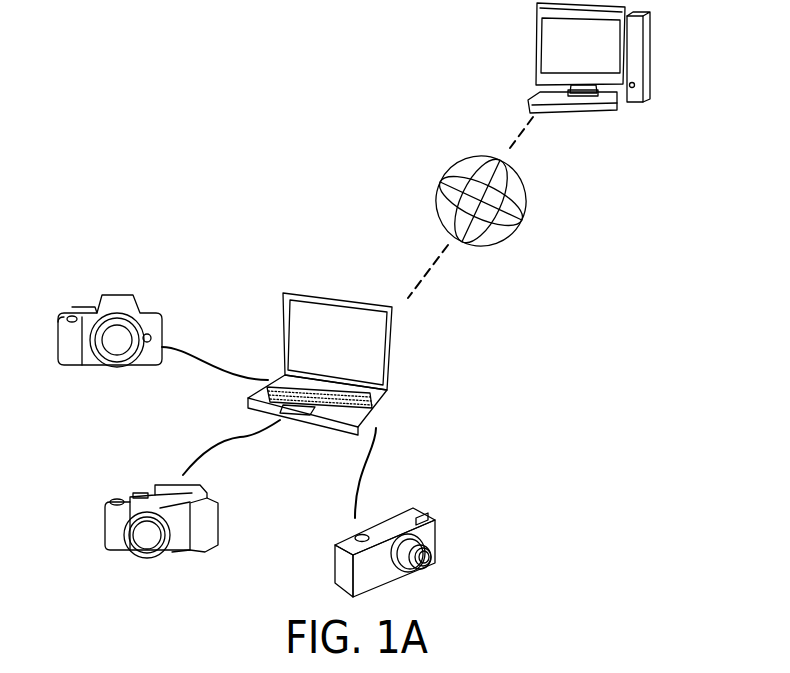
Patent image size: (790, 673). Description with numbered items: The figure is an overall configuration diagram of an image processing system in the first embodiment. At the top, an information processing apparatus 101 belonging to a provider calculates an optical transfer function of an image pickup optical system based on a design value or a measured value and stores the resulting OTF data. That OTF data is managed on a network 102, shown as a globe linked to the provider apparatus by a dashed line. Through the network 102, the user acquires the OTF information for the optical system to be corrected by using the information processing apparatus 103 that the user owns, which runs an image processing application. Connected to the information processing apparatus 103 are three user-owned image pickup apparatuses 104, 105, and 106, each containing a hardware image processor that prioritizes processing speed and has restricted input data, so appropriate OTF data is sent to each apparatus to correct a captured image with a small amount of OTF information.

The information processing apparatus 101 is at (637, 102).
The network 102 is at (520, 223).
The information processing apparatus 103 is at (328, 300).
The image pickup apparatus 104 is at (107, 297).
The image pickup apparatus 105 is at (123, 497).
The image pickup apparatus 106 is at (433, 550).